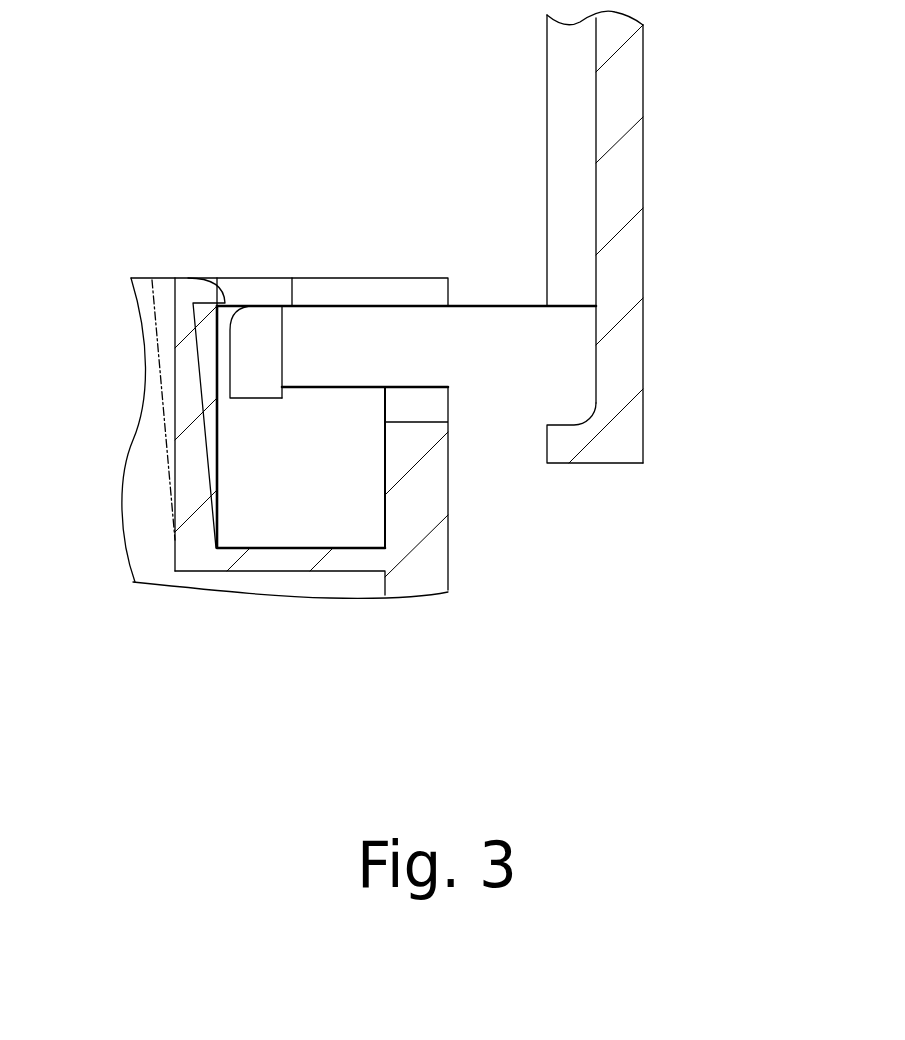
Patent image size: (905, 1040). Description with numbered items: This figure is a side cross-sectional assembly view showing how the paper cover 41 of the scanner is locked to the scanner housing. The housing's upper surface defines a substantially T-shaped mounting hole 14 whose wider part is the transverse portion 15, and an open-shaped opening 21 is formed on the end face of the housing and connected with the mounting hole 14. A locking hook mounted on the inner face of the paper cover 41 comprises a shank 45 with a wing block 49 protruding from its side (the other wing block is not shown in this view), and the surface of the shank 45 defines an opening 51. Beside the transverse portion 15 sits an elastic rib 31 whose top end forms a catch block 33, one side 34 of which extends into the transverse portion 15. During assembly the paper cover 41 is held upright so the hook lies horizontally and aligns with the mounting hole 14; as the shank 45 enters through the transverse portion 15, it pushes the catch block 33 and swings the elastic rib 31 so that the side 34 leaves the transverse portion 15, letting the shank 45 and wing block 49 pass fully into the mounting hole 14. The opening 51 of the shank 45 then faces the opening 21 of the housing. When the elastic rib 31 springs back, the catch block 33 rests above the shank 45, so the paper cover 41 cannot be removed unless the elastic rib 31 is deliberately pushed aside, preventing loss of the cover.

The mounting hole 14 is at (292, 472).
The transverse portion 15 is at (284, 297).
The opening 21 is at (418, 427).
The elastic rib 31 is at (150, 492).
The catch block 33 is at (187, 292).
The side 34 is at (217, 278).
The paper cover 41 is at (643, 170).
The shank 45 is at (372, 331).
The wing block 49 is at (250, 387).
The opening 51 is at (368, 387).